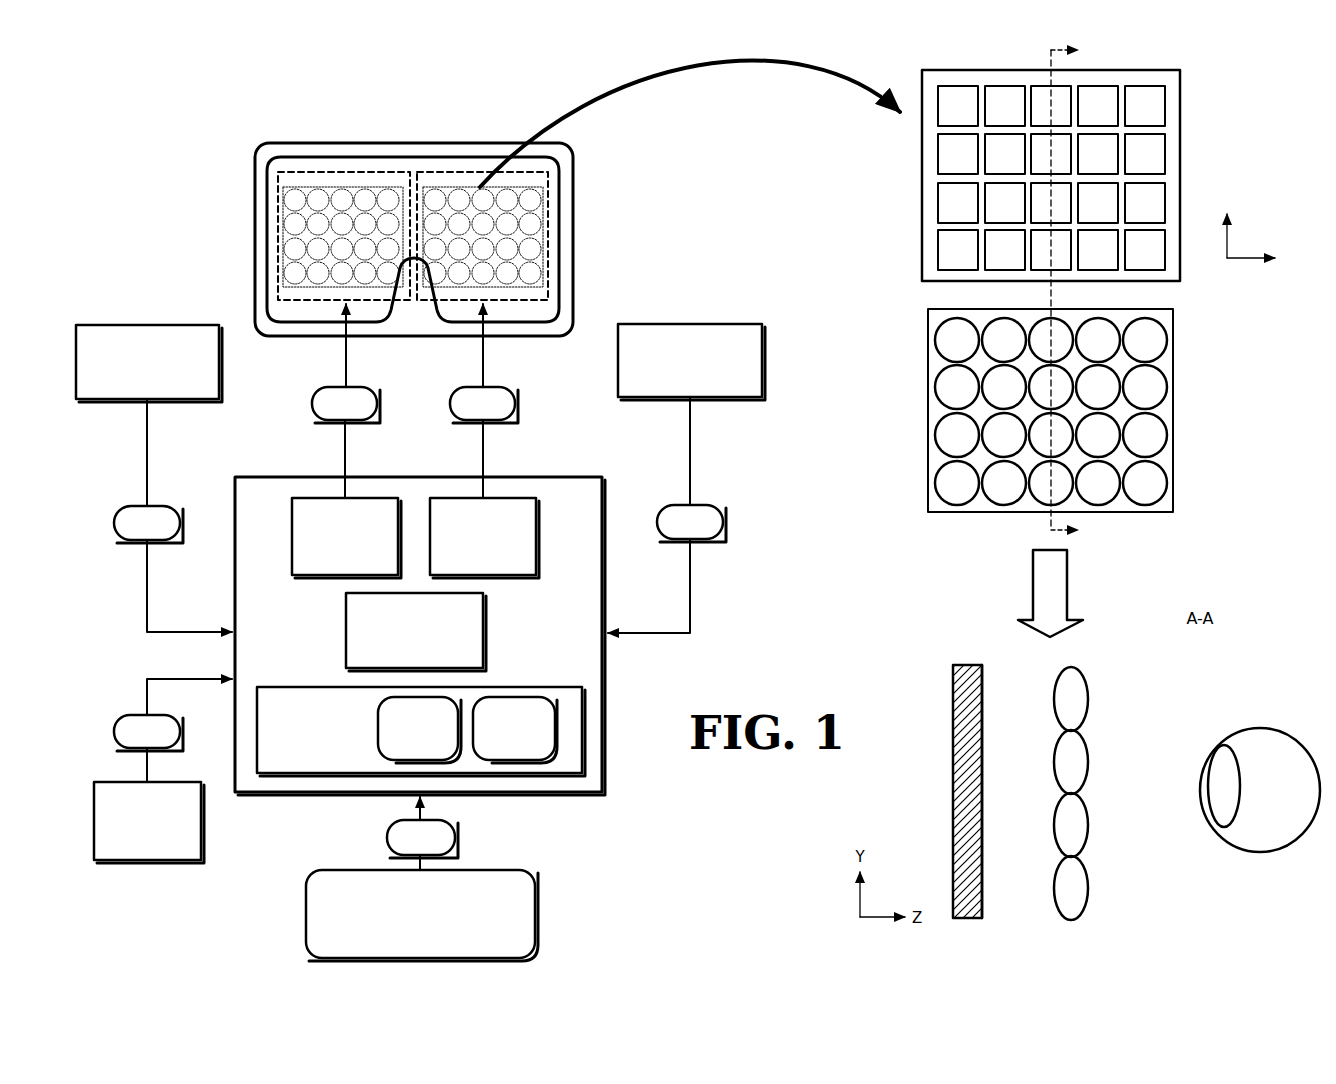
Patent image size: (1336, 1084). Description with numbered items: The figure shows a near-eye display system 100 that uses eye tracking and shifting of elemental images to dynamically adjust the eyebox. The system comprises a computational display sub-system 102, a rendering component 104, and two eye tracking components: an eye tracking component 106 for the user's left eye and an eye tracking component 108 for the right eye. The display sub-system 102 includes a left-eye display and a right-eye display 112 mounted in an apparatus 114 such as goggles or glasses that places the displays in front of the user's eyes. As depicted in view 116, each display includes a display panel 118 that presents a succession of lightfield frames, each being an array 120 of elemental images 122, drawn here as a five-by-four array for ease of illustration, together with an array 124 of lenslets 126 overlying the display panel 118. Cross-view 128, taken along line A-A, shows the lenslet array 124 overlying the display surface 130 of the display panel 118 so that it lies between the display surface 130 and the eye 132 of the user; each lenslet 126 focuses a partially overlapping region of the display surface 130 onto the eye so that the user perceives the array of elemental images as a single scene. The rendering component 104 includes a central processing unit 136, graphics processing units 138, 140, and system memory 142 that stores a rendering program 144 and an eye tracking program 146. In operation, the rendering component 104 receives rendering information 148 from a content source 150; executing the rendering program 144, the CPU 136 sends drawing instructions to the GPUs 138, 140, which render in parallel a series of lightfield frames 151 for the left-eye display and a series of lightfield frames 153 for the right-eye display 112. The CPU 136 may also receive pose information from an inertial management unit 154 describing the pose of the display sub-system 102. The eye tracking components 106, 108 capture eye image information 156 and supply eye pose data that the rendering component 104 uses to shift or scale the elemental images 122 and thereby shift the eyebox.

The near-eye display system 100 is at (188, 256).
The computational display sub-system 102 is at (414, 166).
The rendering component 104 is at (420, 636).
The eye tracking component 106 is at (149, 363).
The eye tracking component 108 is at (691, 362).
The right-eye display 112 is at (470, 172).
The apparatus 114 is at (310, 172).
The view 116 is at (1221, 97).
The display panel 118 is at (918, 175).
The array of elemental images 120 is at (1158, 78).
The elemental image 122 is at (1168, 158).
The lenslet array 124 is at (924, 362).
The lenslet 126 is at (1172, 388).
The cross-view 128 is at (1225, 677).
The display surface 130 is at (987, 829).
The eye 132 is at (1266, 853).
The central processing unit 136 is at (416, 632).
The graphics processing unit 138 is at (346, 538).
The graphics processing unit 140 is at (484, 538).
The system memory 142 is at (421, 731).
The rendering program 144 is at (419, 730).
The eye tracking program 146 is at (515, 730).
The rendering information 148 is at (422, 833).
The content source 150 is at (326, 820).
The lightfield frames 151 is at (346, 401).
The lightfield frames 153 is at (484, 401).
The inertial management unit 154 is at (149, 822).
The eye image information 156 is at (420, 515).